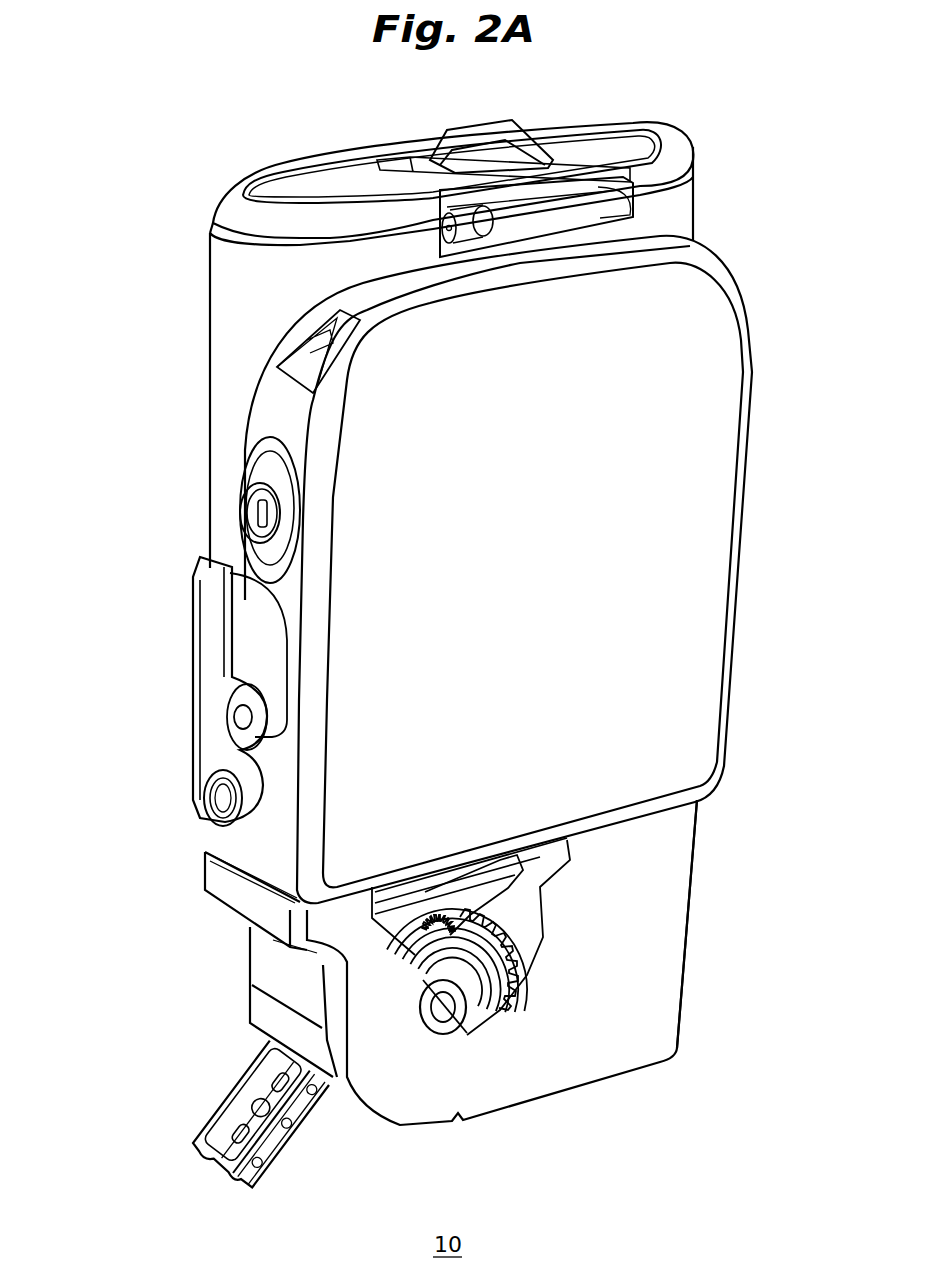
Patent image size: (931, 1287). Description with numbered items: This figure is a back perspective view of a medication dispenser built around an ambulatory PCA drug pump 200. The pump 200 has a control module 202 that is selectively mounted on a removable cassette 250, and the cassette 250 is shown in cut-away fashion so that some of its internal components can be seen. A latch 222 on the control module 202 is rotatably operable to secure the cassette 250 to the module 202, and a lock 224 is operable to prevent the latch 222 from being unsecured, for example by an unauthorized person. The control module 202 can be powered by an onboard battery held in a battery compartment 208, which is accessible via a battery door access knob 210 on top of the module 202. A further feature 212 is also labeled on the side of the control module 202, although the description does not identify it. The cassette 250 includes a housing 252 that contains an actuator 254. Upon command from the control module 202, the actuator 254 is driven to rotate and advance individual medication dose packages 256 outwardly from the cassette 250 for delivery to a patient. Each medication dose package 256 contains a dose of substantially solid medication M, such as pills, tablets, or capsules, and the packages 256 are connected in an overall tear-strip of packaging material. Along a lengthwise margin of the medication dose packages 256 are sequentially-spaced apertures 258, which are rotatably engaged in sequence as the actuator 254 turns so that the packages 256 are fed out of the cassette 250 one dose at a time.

The ambulatory PCA drug pump 200 is at (700, 156).
The control module 202 is at (208, 350).
The battery compartment 208 is at (595, 138).
The battery door access knob 210 is at (476, 125).
The button 212 is at (248, 517).
The latch 222 is at (212, 640).
The lock 224 is at (238, 717).
The removable cassette 250 is at (688, 1006).
The housing 252 is at (688, 920).
The actuator 254 is at (509, 1014).
The medication dose packages 256 is at (215, 1113).
The apertures 258 is at (295, 1133).
The medication M is at (222, 1158).